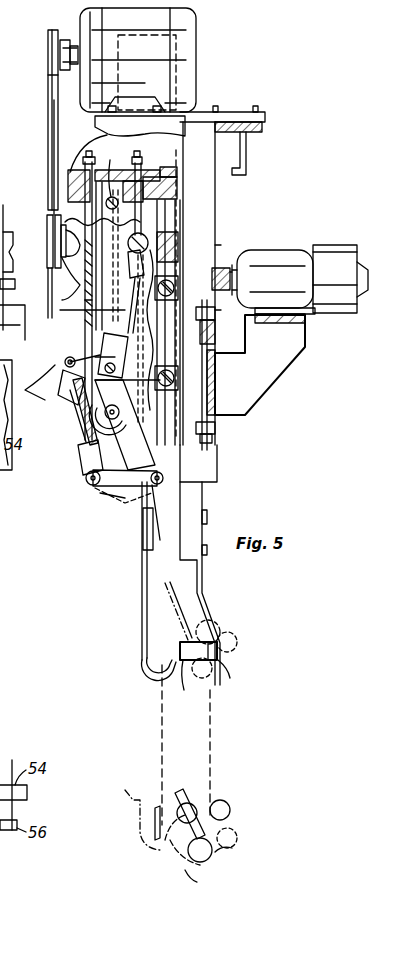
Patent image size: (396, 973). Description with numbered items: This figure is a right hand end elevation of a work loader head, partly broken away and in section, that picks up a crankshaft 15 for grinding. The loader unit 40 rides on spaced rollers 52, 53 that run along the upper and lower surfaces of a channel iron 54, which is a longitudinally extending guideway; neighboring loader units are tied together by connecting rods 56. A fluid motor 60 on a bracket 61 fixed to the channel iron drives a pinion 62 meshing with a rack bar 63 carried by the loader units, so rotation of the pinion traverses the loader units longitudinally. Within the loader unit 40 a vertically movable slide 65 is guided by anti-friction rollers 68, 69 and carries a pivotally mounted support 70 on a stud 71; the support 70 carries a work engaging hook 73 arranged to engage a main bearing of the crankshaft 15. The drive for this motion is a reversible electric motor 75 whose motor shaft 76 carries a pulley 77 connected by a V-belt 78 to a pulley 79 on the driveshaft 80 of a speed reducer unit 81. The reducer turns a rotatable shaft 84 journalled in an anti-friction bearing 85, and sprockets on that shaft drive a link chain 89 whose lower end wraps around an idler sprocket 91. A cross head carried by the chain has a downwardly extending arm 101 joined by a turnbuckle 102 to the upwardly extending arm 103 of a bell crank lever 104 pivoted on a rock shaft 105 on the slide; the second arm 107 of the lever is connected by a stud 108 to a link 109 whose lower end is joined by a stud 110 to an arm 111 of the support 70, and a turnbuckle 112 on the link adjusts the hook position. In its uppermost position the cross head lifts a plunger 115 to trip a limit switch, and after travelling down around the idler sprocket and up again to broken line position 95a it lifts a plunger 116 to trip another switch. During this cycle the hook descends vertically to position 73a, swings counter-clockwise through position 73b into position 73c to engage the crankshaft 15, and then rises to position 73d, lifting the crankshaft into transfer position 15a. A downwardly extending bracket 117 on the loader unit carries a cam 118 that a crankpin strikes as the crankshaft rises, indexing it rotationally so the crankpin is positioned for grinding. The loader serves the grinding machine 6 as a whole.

The sewing machine 6 is at (22, 348).
The crankshaft 15 is at (232, 806).
The crankshaft raised position 15a is at (240, 643).
The loader unit 40 is at (219, 463).
The roller 52 is at (228, 315).
The roller 53 is at (217, 432).
The channel iron 54 is at (216, 380).
The connecting rod 56 is at (14, 287).
The fluid motor 60 is at (336, 252).
The bracket 61 is at (285, 362).
The driven pinion 62 is at (228, 268).
The rack bar 63 is at (222, 248).
The vertically movable slide 65 is at (153, 286).
The anti-friction roller 68 is at (179, 240).
The anti-friction roller 69 is at (198, 463).
The pivotally mounted support 70 is at (148, 500).
The stud 71 is at (153, 486).
The work engaging hook 73 is at (141, 645).
The hook lowered position 73a is at (128, 798).
The hook intermediate swing position 73b is at (188, 880).
The hook engaging position 73c is at (222, 852).
The hook raised position 73d is at (228, 672).
The reversible electric motor 75 is at (196, 55).
The motor shaft 76 is at (68, 40).
The pulley 77 is at (48, 58).
The V-belt 78 is at (52, 100).
The pulley 79 is at (48, 232).
The driveshaft 80 is at (64, 281).
The speed reducer unit 81 is at (84, 287).
The rotatable shaft 84 is at (100, 176).
The anti-friction bearing 85 is at (136, 176).
The link chain 89 is at (127, 399).
The idler sprocket 91 is at (122, 425).
The cross head broken line position 95a is at (70, 245).
The downwardly extending arm 101 is at (178, 258).
The turnbuckle 102 is at (118, 310).
The upwardly extending arm 103 is at (104, 334).
The bell crank lever 104 is at (72, 358).
The rock shaft 105 is at (64, 385).
The second arm 107 is at (65, 364).
The stud 108 is at (40, 389).
The link 109 is at (82, 418).
The stud 110 is at (86, 478).
The arm 111 is at (100, 490).
The turnbuckle 112 is at (70, 416).
The plunger 115 is at (150, 215).
The plunger 116 is at (108, 134).
The downwardly extending bracket 117 is at (204, 586).
The cam 118 is at (184, 687).